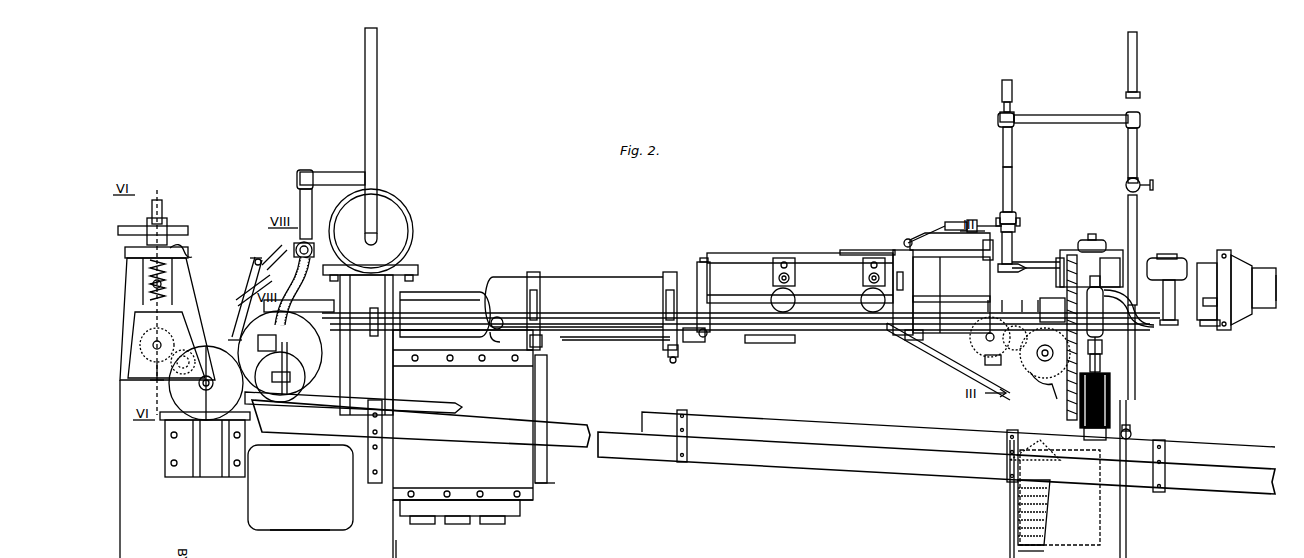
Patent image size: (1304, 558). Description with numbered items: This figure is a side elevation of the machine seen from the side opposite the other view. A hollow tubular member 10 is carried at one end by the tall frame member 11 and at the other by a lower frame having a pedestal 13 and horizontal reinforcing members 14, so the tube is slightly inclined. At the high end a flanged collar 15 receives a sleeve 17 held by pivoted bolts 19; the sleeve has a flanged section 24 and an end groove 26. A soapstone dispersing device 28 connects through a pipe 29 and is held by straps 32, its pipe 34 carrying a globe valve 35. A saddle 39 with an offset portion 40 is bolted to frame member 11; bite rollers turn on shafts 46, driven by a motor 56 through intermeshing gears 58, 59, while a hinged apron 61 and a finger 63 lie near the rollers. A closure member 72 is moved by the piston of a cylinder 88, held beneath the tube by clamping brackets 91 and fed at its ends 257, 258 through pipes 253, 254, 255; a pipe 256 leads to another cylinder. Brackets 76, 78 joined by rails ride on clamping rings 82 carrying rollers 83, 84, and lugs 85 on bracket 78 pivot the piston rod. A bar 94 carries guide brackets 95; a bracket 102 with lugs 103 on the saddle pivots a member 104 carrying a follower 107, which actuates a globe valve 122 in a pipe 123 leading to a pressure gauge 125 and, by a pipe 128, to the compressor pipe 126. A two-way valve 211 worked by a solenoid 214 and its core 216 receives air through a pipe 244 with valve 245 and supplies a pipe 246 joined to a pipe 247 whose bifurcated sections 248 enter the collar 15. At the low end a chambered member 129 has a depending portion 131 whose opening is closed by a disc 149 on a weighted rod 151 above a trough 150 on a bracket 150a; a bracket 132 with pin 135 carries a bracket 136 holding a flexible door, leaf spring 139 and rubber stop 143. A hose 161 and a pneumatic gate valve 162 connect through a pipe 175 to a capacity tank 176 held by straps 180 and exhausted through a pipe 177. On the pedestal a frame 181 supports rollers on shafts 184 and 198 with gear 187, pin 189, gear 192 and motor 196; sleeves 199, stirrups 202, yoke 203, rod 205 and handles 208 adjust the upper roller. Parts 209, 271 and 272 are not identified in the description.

The hollow elongate tubular member 10 is at (433, 290).
The frame member 11 is at (1126, 523).
The vertical pedestal-like portion 13 is at (250, 491).
The horizontal reinforcing members 14 is at (302, 448).
The flanged collar 15 is at (1202, 262).
The sleeve 17 is at (1242, 268).
The bolts 19 is at (406, 549).
The flanged concentric section 24 is at (1262, 272).
The groove 26 is at (1270, 305).
The soapstone dispersing device 28 is at (1018, 523).
The pipe 29 is at (1105, 360).
The straps 32 is at (1025, 548).
The pipe 34 is at (1030, 320).
The globe valve 35 is at (1132, 432).
The saddle 39 is at (975, 272).
The offset portion 40 is at (1058, 258).
The shafts 46 is at (995, 320).
The motor 56 is at (1040, 362).
The gear 58 is at (1020, 340).
The gear 59 is at (990, 342).
The hinged apron 61 is at (1009, 505).
The finger 63 is at (962, 366).
The closure member 72 is at (925, 300).
The bracket member 76 is at (898, 280).
The second U-shape bracket 78 is at (698, 262).
The clamping rings 82 is at (776, 260).
The rollers 83 is at (786, 300).
The rollers 84 is at (786, 265).
The lugs 85 is at (708, 336).
The cylinder 88 is at (602, 337).
The clamping brackets 91 is at (540, 280).
The elongate bar 94 is at (728, 253).
The guide brackets 95 is at (878, 253).
The bracket 102 is at (1005, 252).
The lugs 103 is at (985, 240).
The member 104 is at (945, 238).
The follower 107 is at (907, 240).
The globe valve 122 is at (1012, 212).
The pipe 123 is at (1012, 176).
The pressure gauge 125 is at (1012, 88).
The pipe 126 is at (1137, 80).
The pipe 128 is at (1065, 115).
The chambered member 129 is at (322, 350).
The depending portion 131 is at (304, 360).
The bracket 132 is at (259, 284).
The pin 135 is at (270, 258).
The bracket 136 is at (258, 258).
The leaf spring 139 is at (224, 318).
The rubber stop 143 is at (255, 255).
The disc 149 is at (262, 357).
The trough 150 is at (738, 458).
The bracket 150a is at (380, 460).
The rod 151 is at (300, 377).
The hose 161 is at (294, 291).
The pneumatic gate valve 162 is at (314, 250).
The pipe 175 is at (331, 170).
The steel capacity tank 176 is at (408, 222).
The pipe 177 is at (378, 196).
The straps 180 is at (417, 250).
The frame 181 is at (178, 306).
The shaft 184 is at (150, 356).
The gear wheel 187 is at (155, 372).
The pin 189 is at (186, 352).
The gear 192 is at (178, 330).
The motor 196 is at (178, 405).
The shaft 198 is at (165, 272).
The sleeves 199 is at (160, 285).
The stirrups 202 is at (147, 232).
The yoke 203 is at (166, 252).
The rod 205 is at (162, 208).
The handles 208 is at (168, 226).
The hook 209 is at (183, 258).
The two-way valve 211 is at (1105, 320).
The solenoid 214 is at (1112, 408).
The core 216 is at (1105, 373).
The pipe 244 is at (1137, 207).
The valve 245 is at (1140, 180).
The pipe section 246 is at (1125, 300).
The pipe 247 is at (345, 305).
The bifurcated pipe sections 248 is at (1206, 305).
The pipe 253 is at (668, 350).
The pipe 254 is at (770, 320).
The pipe 255 is at (497, 335).
The pipe 256 is at (318, 258).
The cylinder end 257 is at (692, 340).
The cylinder end 258 is at (540, 345).
The cap 271 is at (1094, 242).
The valve 272 is at (1155, 258).